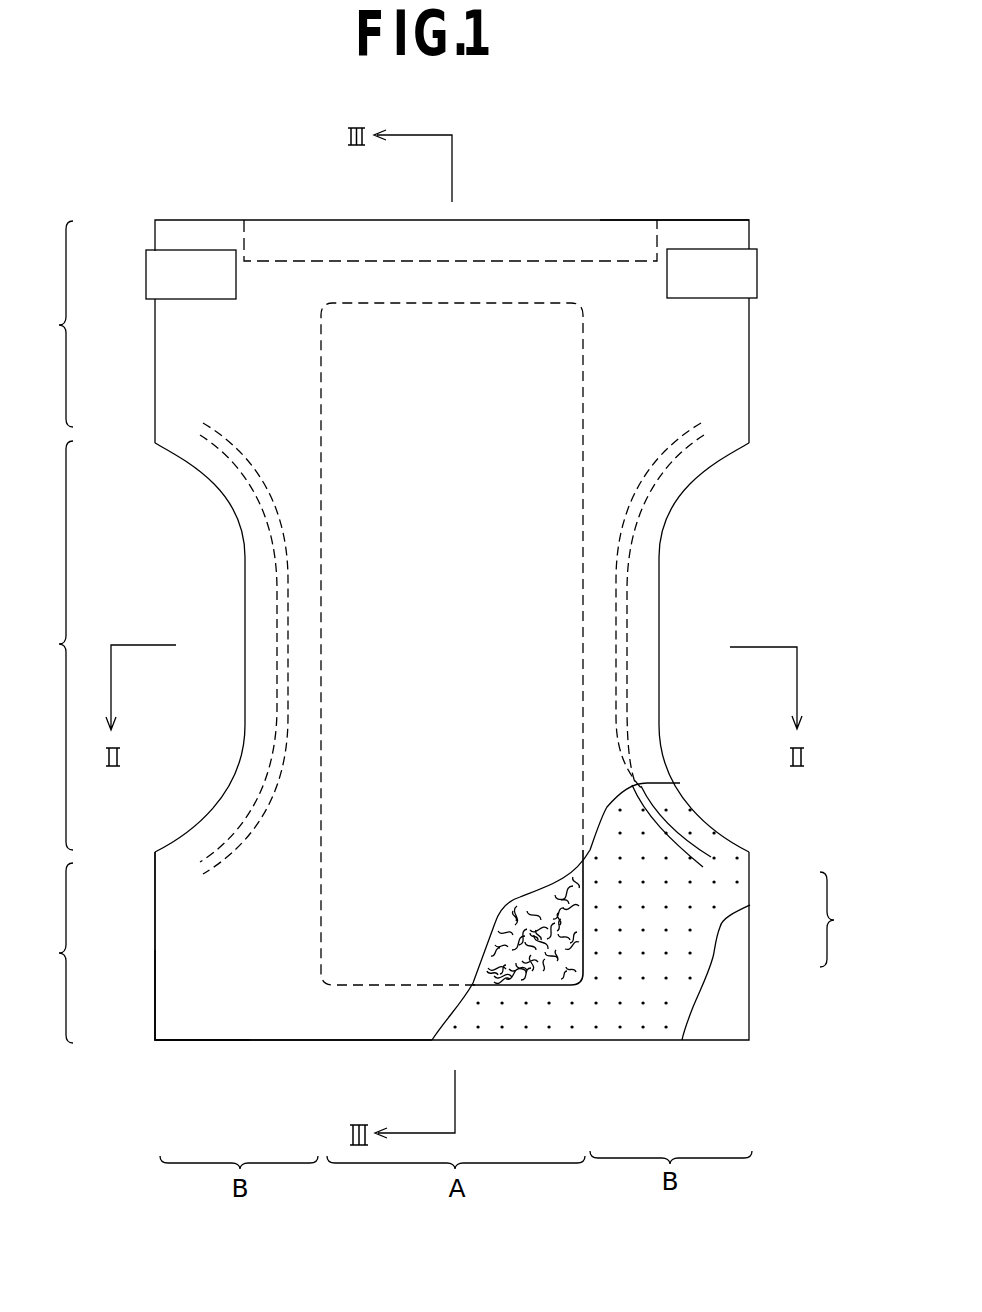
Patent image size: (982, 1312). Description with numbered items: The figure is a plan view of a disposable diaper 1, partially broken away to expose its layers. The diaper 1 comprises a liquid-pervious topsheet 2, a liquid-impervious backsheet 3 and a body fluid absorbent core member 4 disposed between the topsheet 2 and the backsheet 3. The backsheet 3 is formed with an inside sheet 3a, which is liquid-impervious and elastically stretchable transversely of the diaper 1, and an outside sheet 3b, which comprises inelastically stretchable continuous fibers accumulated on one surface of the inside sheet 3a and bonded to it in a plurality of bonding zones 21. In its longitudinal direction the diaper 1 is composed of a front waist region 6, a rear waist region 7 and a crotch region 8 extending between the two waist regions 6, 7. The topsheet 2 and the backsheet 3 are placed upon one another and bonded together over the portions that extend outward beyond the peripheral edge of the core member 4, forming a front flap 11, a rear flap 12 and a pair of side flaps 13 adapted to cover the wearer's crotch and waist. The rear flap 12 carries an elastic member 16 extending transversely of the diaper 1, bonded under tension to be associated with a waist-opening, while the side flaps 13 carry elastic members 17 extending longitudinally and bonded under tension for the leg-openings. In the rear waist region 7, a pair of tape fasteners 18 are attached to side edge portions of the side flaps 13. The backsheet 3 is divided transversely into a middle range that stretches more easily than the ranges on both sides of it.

The disposable diaper 1 is at (725, 168).
The liquid-pervious topsheet 2 is at (245, 968).
The liquid-impervious backsheet 3 is at (837, 919).
The inside sheet 3a is at (733, 892).
The outside sheet 3b is at (733, 952).
The body fluid absorbent core member 4 is at (545, 972).
The front waist region 6 is at (57, 953).
The rear waist region 7 is at (55, 324).
The crotch region 8 is at (55, 645).
The front flap 11 is at (198, 1015).
The rear flap 12 is at (628, 285).
The side flaps 13 is at (648, 560).
The elastic member 16 is at (513, 240).
The elastic members 17 is at (677, 830).
The tape fasteners 18 is at (153, 275).
The bonding zones 21 is at (713, 880).